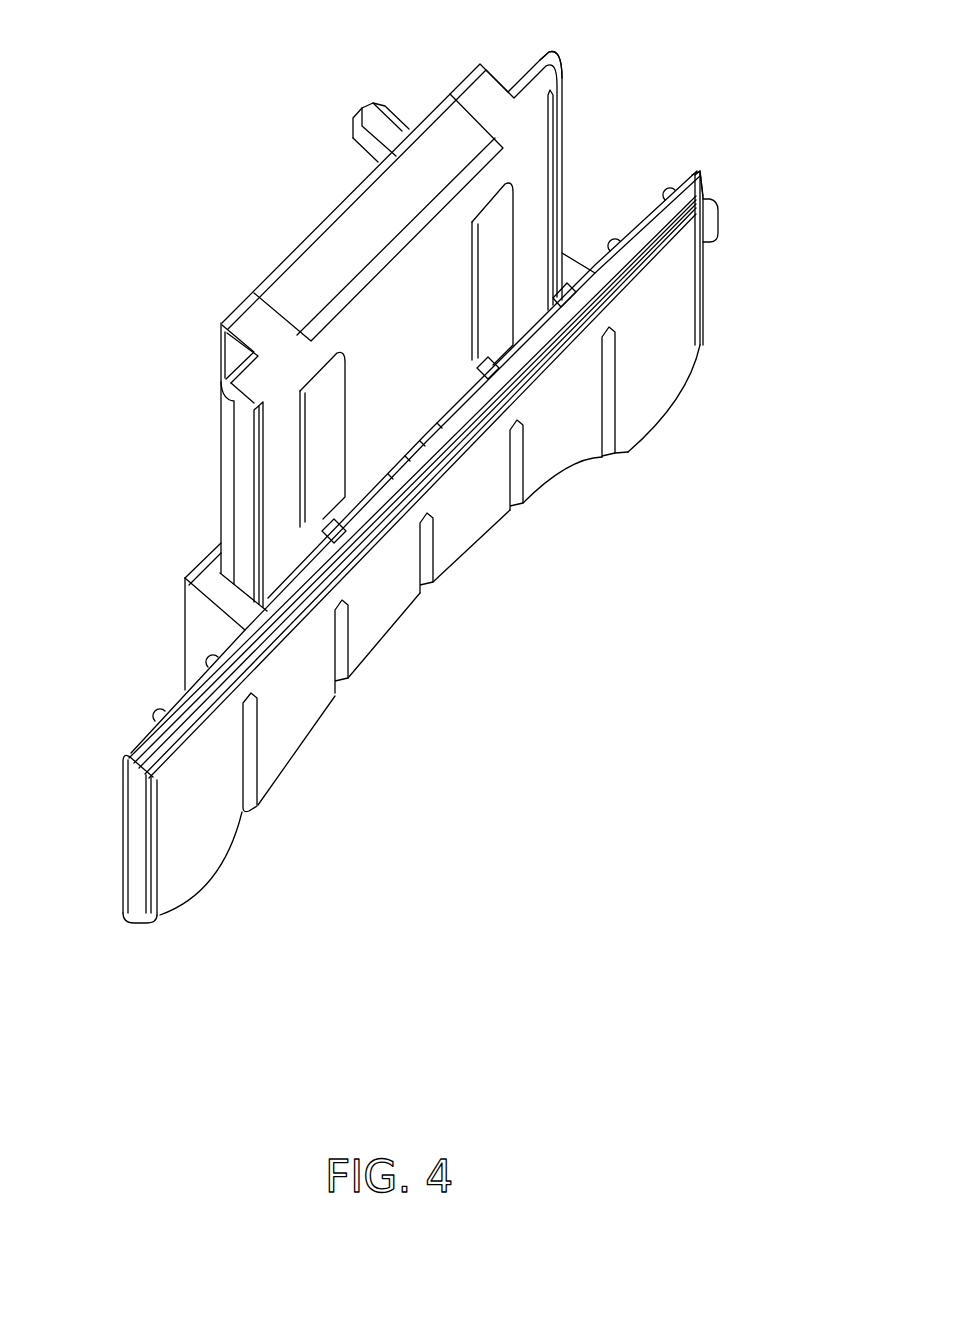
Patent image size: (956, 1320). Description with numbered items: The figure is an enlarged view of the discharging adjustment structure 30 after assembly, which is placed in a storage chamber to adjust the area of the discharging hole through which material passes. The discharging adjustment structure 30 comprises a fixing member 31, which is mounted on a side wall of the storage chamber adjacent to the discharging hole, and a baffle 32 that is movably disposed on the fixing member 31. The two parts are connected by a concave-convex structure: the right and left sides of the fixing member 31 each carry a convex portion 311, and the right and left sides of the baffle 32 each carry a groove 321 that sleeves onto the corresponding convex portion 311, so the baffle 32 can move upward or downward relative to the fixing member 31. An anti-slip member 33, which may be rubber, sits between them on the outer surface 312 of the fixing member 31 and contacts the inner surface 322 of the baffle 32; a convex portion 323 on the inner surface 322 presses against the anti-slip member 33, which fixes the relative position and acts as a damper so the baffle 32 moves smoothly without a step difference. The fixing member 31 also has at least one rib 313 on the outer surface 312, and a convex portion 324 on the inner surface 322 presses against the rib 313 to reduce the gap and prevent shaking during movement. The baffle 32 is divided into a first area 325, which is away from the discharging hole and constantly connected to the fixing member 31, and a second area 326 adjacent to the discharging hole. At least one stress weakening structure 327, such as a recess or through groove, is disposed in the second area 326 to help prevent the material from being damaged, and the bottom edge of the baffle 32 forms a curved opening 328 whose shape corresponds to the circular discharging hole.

The discharging adjustment structure 30 is at (162, 112).
The fixing member 31 is at (302, 262).
The convex portion 311 is at (556, 60).
The outer surface 312 is at (405, 276).
The rib 313 is at (560, 137).
The baffle 32 is at (693, 292).
The groove 321 is at (567, 258).
The inner surface 322 is at (435, 442).
The convex portion 323 is at (497, 368).
The convex portion 324 is at (563, 293).
The first area 325 is at (690, 190).
The second area 326 is at (692, 346).
The stress weakening structure 327 is at (607, 421).
The curved opening 328 is at (478, 543).
The anti-slip member 33 is at (336, 378).